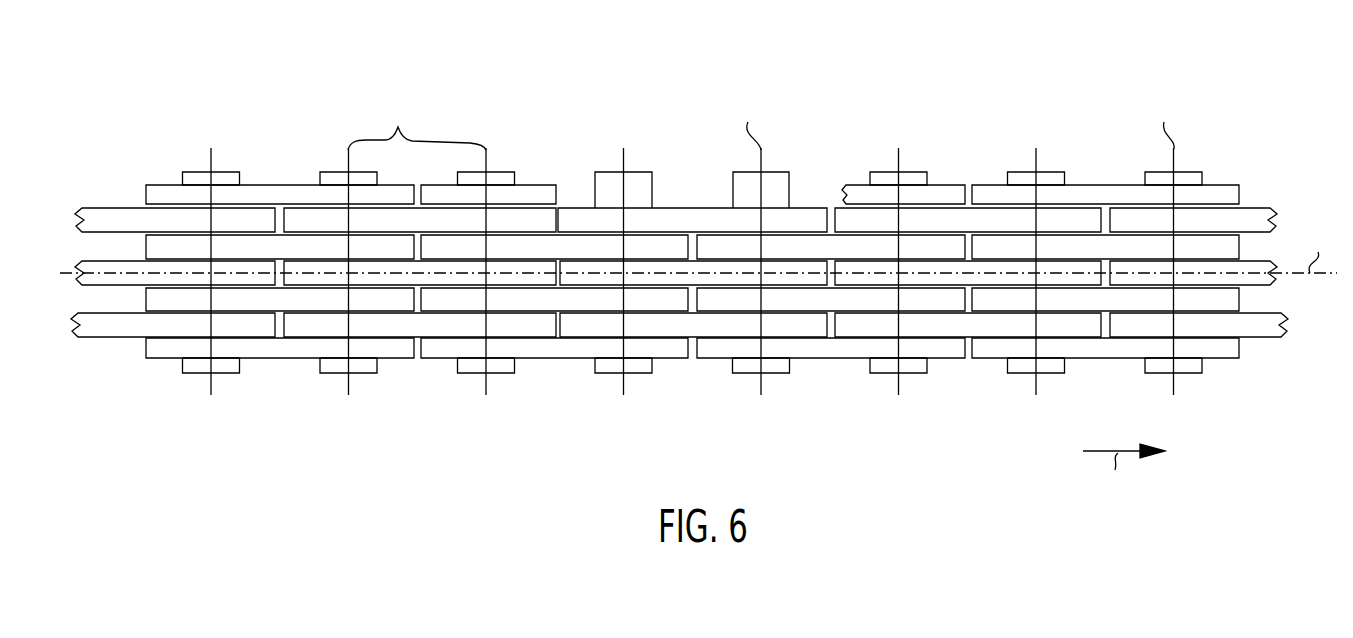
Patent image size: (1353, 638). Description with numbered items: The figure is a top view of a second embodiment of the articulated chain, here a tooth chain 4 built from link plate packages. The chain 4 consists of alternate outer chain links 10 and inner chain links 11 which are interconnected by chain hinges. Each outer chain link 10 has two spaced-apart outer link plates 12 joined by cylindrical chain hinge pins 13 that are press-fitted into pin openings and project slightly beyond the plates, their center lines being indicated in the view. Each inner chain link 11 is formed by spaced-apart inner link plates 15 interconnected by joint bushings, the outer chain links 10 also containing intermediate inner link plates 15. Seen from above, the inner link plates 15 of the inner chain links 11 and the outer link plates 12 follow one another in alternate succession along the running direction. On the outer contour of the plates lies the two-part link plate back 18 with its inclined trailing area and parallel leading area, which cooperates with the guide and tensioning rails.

The timing chain 4 is at (136, 125).
The outer chain link 10 is at (1108, 174).
The inner chain link 11 is at (697, 174).
The outer link plate 12 is at (1225, 193).
The chain hinge pin 13 is at (1192, 178).
The inner link plate 15 is at (120, 327).
The link plate back 18 is at (806, 214).